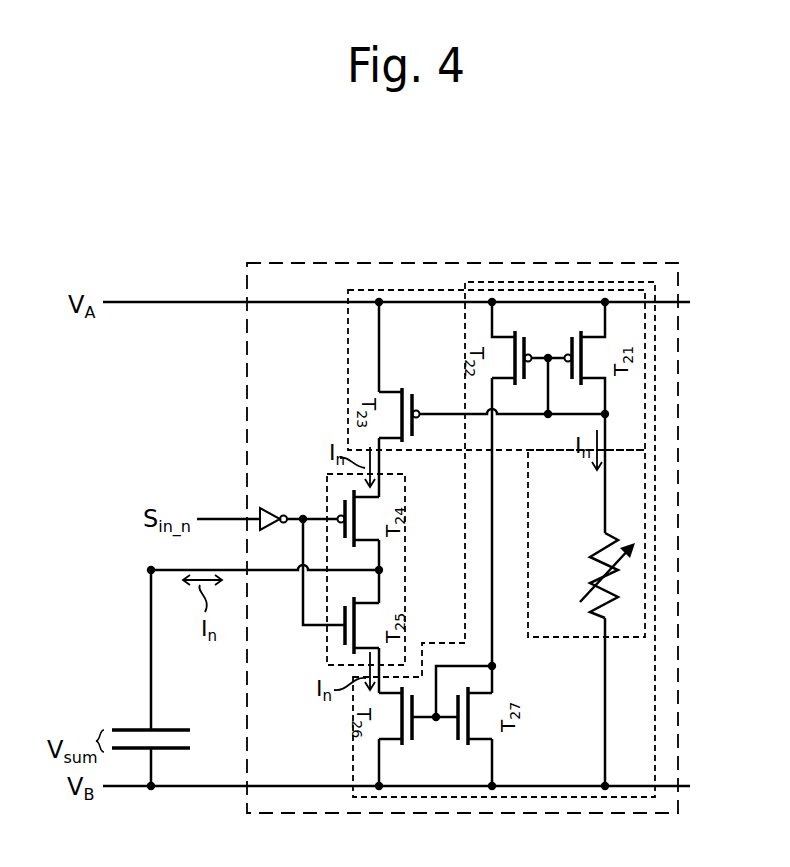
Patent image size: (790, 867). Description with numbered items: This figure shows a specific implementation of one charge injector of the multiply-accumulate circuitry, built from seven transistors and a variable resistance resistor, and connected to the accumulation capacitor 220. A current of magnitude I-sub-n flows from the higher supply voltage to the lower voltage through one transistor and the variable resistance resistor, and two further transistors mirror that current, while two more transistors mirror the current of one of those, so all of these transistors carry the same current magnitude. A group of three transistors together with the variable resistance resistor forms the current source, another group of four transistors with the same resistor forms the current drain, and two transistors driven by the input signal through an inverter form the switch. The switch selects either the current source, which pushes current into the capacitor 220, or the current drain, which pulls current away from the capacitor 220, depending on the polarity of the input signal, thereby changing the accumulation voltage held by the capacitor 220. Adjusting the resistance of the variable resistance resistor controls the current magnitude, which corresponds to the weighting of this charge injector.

The accumulation capacitor 220 is at (132, 728).